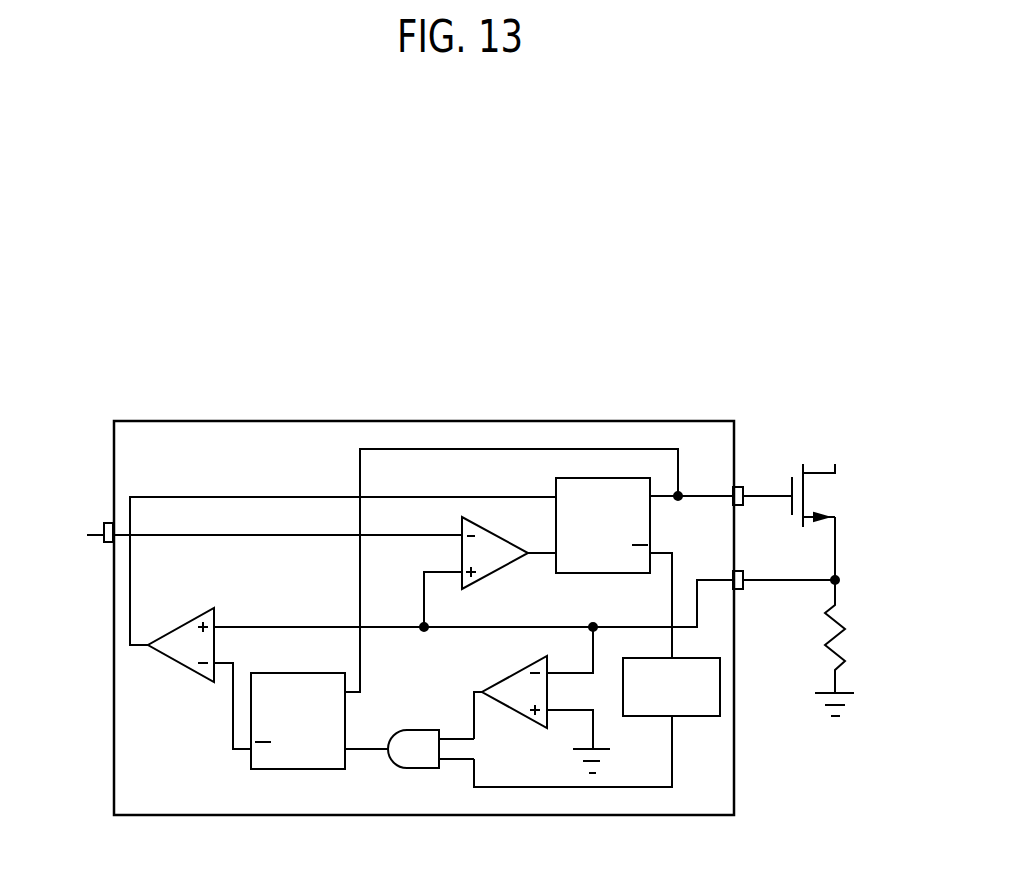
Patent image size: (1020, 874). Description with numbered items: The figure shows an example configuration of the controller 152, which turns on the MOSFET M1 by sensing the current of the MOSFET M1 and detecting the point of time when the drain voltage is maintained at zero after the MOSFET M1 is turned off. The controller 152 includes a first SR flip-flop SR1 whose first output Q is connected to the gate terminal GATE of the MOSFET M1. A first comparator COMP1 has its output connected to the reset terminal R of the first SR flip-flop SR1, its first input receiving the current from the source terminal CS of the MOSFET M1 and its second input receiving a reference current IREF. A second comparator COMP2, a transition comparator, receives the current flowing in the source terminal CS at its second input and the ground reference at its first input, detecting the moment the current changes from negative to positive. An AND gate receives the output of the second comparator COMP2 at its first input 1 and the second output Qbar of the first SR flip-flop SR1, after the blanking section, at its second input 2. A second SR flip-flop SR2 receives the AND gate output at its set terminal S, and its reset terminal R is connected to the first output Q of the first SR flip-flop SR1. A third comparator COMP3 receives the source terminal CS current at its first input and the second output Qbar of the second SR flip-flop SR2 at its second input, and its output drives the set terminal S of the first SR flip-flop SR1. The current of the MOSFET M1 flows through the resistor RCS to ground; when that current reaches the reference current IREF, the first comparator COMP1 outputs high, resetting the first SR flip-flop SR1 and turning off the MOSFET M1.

The controller 152 is at (422, 421).
The first input of the AND gate 1 is at (465, 733).
The second input of the AND gate 2 is at (465, 761).
The first comparator COMP1 is at (460, 553).
The second comparator COMP2 is at (547, 692).
The third comparator COMP3 is at (214, 645).
The first SR flip-flop SR1 is at (603, 525).
The second SR flip-flop SR2 is at (298, 721).
The MOSFET M1 is at (831, 495).
The resistor RCS is at (856, 636).
The gate terminal GATE is at (761, 506).
The source terminal CS is at (749, 593).
The reference current IREF is at (75, 533).